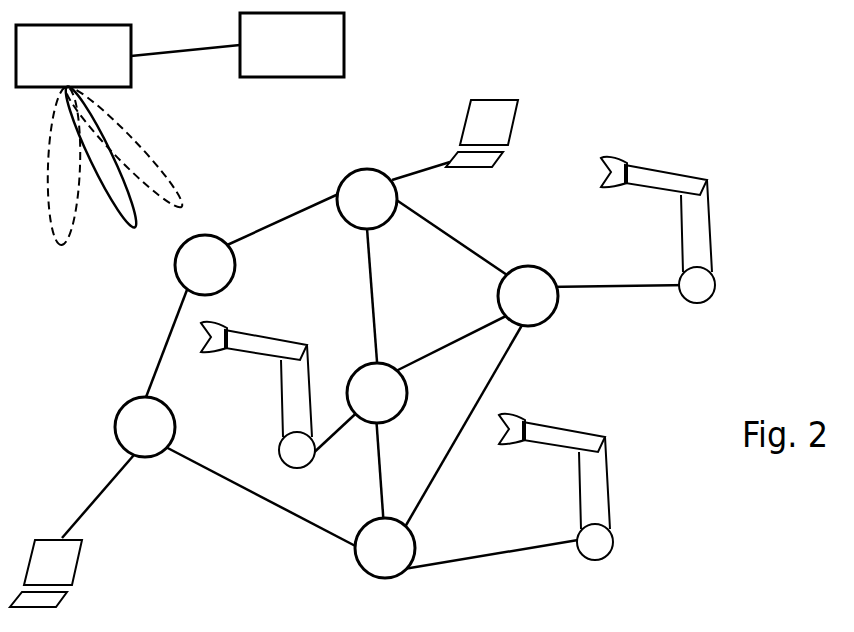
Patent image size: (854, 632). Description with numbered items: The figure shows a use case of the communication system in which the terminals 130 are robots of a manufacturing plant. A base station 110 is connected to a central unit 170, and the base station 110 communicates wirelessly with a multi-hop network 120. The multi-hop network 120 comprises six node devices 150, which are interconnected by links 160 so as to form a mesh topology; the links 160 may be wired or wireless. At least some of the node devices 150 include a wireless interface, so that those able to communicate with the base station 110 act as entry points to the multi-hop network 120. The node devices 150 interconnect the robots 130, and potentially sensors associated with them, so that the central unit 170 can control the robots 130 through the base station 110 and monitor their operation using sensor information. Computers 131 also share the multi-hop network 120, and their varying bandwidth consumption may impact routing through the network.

The base station 110 is at (131, 78).
The central unit 170 is at (344, 52).
The multi-hop network 120 is at (120, 311).
The node devices 150 is at (373, 167).
The links 160 is at (278, 220).
The terminals 130 is at (265, 332).
The computers 131 is at (518, 112).